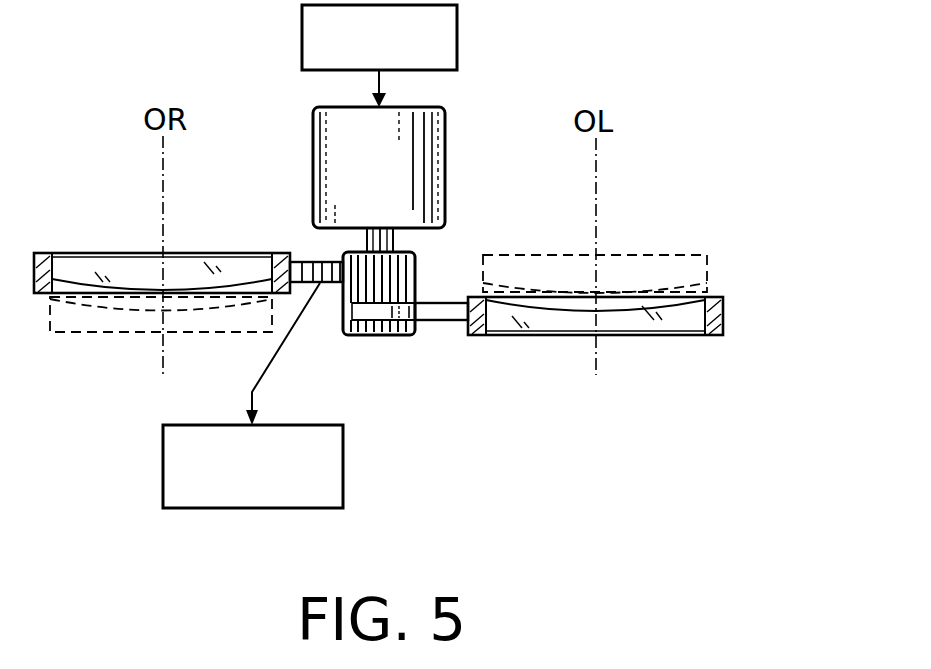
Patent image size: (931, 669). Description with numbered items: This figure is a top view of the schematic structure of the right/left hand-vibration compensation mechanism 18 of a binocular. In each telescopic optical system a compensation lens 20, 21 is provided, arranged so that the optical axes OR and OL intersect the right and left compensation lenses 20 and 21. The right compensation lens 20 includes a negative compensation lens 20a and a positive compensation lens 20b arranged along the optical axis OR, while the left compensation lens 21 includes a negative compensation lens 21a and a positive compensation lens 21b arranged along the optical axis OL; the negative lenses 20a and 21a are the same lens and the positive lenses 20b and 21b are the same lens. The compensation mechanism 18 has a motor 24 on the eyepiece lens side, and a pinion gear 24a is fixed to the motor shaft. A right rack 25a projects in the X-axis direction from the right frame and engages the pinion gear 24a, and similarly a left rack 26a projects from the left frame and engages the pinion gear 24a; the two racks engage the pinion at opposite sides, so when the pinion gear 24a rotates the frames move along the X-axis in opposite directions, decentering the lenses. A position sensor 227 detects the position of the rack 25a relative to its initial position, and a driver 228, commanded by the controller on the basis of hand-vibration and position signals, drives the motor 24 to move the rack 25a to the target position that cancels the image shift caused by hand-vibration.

The right/left compensation mechanism 18 is at (653, 142).
The compensation lens 20 is at (149, 354).
The negative compensation lens 20a is at (128, 318).
The positive compensation lens 20b is at (95, 284).
The compensation lens 21 is at (603, 355).
The negative compensation lens 21a is at (680, 325).
The positive compensation lens 21b is at (647, 278).
The motor 24 is at (427, 168).
The pinion gear 24a is at (343, 296).
The right rack 25a is at (315, 262).
The left rack 26a is at (443, 321).
The position sensor 227 is at (343, 478).
The driver 228 is at (457, 40).